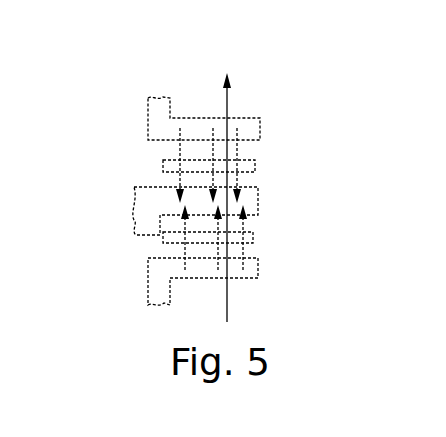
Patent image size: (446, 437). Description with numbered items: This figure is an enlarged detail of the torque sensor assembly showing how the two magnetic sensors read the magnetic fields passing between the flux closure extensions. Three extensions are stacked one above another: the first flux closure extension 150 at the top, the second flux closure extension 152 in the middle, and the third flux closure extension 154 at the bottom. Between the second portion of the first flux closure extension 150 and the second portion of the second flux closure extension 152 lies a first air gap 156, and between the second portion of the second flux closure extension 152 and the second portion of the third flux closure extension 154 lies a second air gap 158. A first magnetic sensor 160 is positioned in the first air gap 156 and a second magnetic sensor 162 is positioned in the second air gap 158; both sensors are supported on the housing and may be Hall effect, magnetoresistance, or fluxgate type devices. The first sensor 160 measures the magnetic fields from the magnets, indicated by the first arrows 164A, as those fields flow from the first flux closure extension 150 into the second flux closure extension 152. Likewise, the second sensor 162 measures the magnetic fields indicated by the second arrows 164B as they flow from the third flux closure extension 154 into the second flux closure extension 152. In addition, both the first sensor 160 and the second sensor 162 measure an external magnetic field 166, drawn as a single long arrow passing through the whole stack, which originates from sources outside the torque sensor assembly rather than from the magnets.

The first flux closure extension 150 is at (262, 128).
The second flux closure extension 152 is at (258, 200).
The third flux closure extension 154 is at (262, 267).
The first air gap 156 is at (262, 150).
The second air gap 158 is at (262, 252).
The first magnetic sensor 160 is at (255, 165).
The second magnetic sensor 162 is at (253, 238).
The first arrows 164A is at (160, 152).
The second arrows 164B is at (160, 250).
The external magnetic field 166 is at (229, 99).